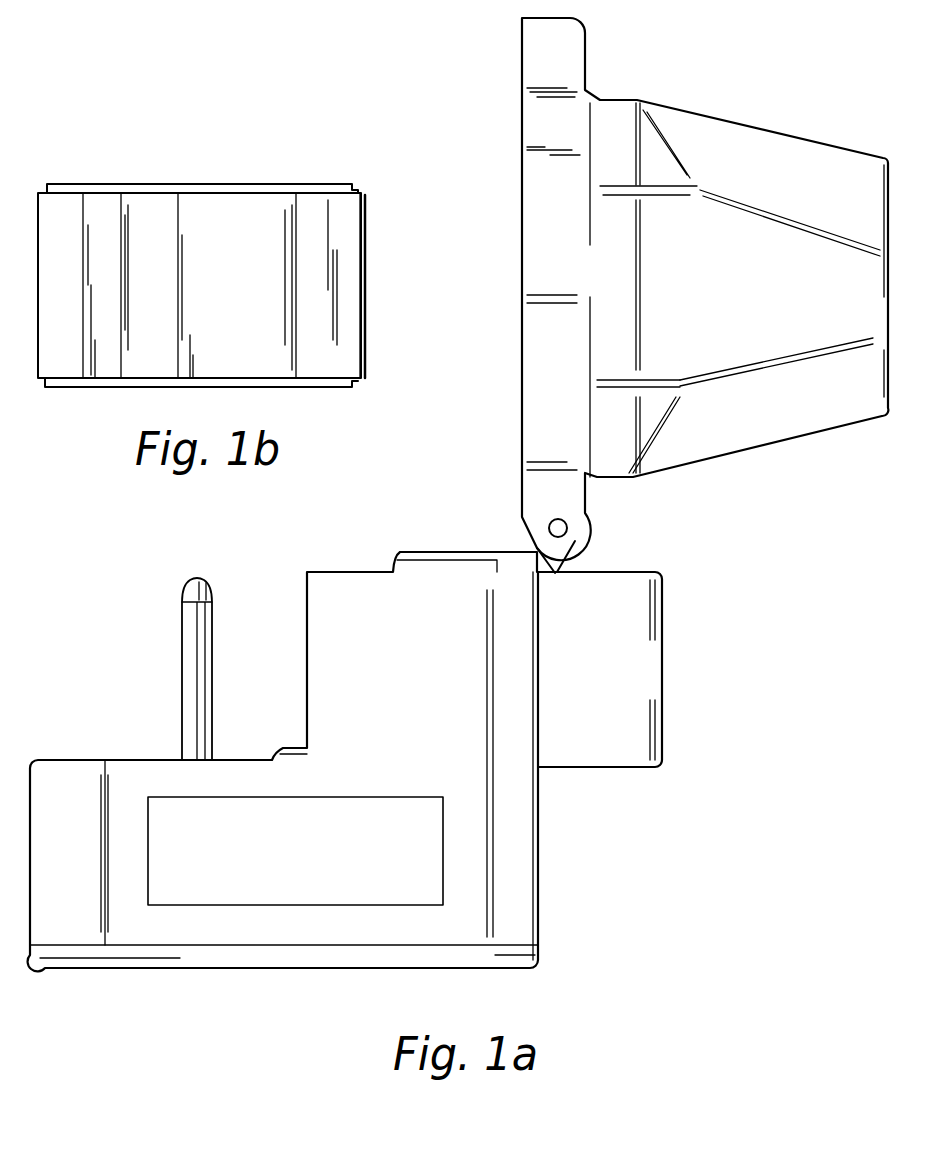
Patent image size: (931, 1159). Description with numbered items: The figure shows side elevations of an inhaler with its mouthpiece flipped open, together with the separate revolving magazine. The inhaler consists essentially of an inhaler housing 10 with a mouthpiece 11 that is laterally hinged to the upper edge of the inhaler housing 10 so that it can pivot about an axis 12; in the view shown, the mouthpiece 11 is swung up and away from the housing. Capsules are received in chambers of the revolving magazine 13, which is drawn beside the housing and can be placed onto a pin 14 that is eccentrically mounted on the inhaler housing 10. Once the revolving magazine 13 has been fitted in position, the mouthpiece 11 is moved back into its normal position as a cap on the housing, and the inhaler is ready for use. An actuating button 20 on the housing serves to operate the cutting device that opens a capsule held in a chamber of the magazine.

In FIG. 1A, the inhaler housing 10 is at (572, 815).
In FIG. 1A, the mouthpiece 11 is at (697, 128).
In FIG. 1A, the axis 12 is at (570, 527).
In FIG. 1B, the revolving magazine 13 is at (311, 218).
In FIG. 1A, the pin 14 is at (185, 628).
In FIG. 1A, the actuating button 20 is at (663, 665).